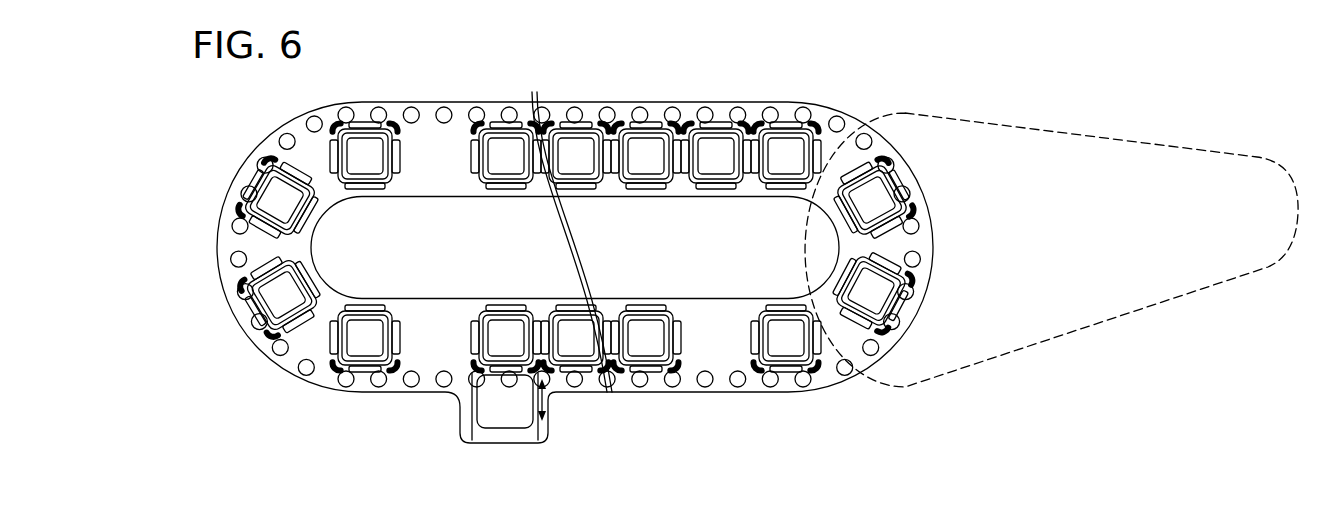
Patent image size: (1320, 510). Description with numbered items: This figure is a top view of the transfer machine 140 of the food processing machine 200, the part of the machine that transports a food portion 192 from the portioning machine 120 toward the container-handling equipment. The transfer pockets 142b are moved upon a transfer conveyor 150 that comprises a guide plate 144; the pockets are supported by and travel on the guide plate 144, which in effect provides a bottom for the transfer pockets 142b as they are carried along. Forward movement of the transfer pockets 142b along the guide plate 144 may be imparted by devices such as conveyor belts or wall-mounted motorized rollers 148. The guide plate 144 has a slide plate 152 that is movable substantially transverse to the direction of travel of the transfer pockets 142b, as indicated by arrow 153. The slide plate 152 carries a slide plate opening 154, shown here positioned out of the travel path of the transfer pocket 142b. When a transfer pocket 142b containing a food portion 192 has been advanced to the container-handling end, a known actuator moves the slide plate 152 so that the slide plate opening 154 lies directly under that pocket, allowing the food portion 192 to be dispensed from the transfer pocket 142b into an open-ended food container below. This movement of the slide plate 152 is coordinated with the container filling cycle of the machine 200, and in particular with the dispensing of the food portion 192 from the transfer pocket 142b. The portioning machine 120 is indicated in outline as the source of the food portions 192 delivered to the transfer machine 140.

The portioning machine 120 is at (962, 99).
The transfer machine 140 is at (575, 82).
The transfer pocket 142b is at (331, 373).
The guide plate 144 is at (273, 138).
The wall-mounted motorized roller 148 is at (757, 123).
The transfer conveyor 150 is at (392, 89).
The slide plate 152 is at (490, 443).
The arrow 153 is at (543, 402).
The slide plate opening 154 is at (497, 422).
The food portion 192 is at (917, 203).
The food processing machine 200 is at (809, 54).